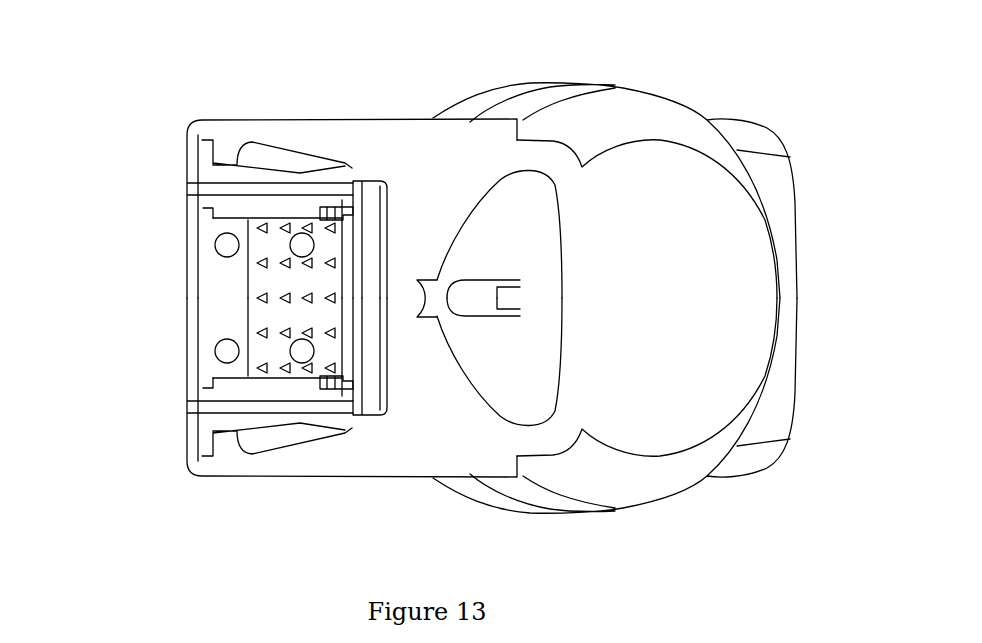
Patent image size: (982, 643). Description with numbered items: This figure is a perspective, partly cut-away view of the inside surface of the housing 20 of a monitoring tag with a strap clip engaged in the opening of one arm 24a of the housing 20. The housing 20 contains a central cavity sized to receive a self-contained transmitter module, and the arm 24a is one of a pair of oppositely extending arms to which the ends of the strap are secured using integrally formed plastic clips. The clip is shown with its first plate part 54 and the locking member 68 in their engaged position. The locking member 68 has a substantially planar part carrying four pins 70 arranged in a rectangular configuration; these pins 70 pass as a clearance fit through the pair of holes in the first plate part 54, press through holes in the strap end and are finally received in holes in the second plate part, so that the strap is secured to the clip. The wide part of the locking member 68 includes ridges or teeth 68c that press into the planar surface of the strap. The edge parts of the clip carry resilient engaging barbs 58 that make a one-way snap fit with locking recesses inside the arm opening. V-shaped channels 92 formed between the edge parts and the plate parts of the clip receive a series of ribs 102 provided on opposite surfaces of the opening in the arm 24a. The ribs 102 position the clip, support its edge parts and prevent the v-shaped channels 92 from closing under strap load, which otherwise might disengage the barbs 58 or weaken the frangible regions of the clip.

The housing 20 is at (670, 160).
The arm 24a is at (367, 458).
The first plate part 54 is at (217, 292).
The resilient engaging barb 58 is at (259, 148).
The locking member 68 is at (270, 280).
The ridges or teeth 68c is at (337, 333).
The pins 70 is at (292, 243).
The v-shaped channels 92 is at (248, 213).
The ribs 102 is at (342, 210).